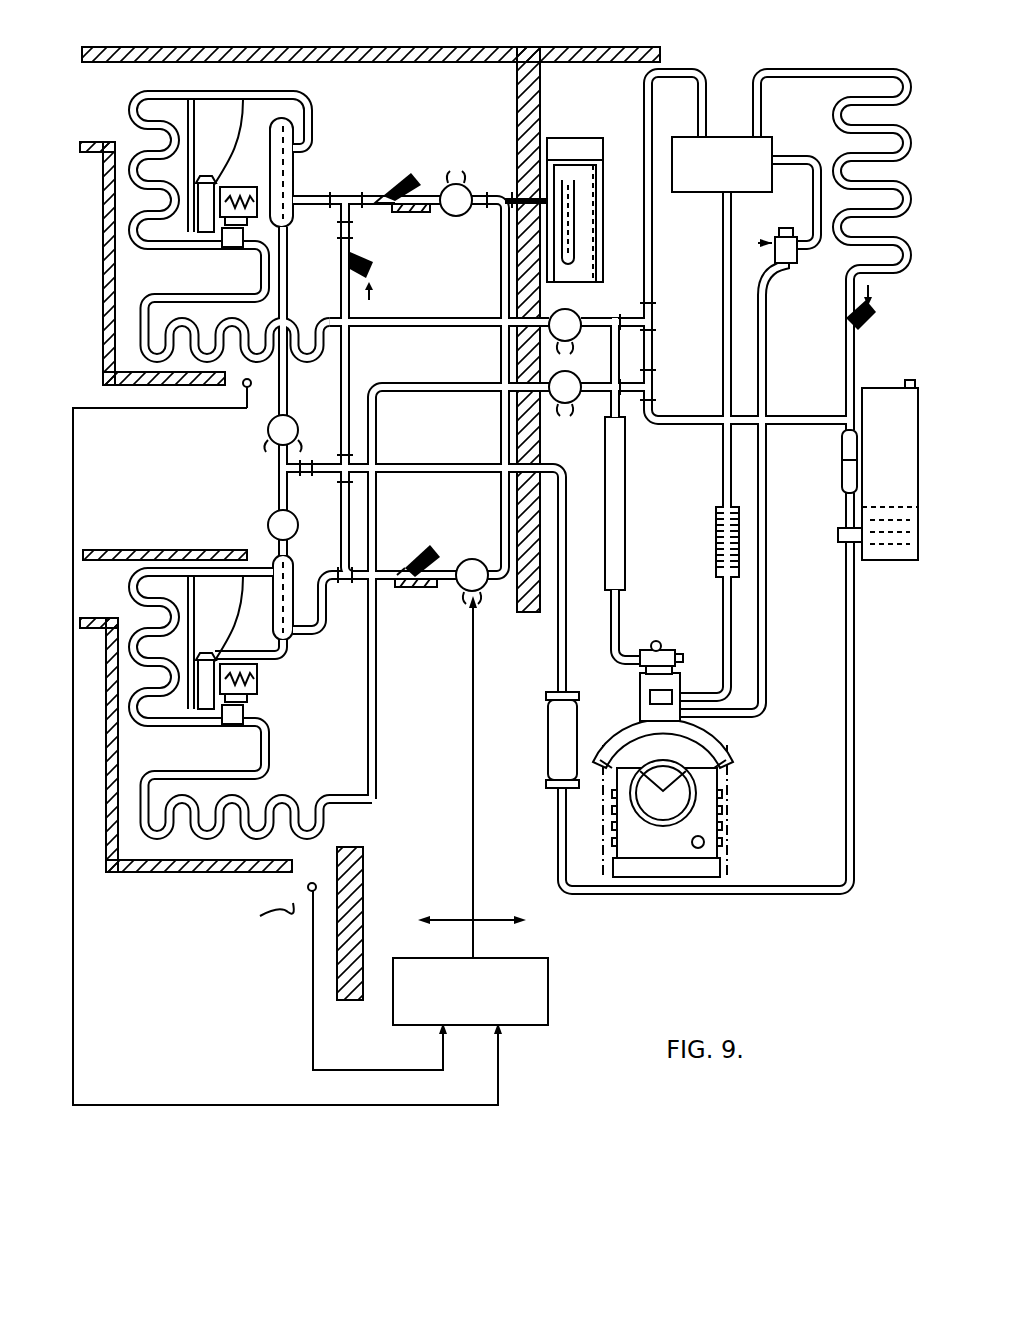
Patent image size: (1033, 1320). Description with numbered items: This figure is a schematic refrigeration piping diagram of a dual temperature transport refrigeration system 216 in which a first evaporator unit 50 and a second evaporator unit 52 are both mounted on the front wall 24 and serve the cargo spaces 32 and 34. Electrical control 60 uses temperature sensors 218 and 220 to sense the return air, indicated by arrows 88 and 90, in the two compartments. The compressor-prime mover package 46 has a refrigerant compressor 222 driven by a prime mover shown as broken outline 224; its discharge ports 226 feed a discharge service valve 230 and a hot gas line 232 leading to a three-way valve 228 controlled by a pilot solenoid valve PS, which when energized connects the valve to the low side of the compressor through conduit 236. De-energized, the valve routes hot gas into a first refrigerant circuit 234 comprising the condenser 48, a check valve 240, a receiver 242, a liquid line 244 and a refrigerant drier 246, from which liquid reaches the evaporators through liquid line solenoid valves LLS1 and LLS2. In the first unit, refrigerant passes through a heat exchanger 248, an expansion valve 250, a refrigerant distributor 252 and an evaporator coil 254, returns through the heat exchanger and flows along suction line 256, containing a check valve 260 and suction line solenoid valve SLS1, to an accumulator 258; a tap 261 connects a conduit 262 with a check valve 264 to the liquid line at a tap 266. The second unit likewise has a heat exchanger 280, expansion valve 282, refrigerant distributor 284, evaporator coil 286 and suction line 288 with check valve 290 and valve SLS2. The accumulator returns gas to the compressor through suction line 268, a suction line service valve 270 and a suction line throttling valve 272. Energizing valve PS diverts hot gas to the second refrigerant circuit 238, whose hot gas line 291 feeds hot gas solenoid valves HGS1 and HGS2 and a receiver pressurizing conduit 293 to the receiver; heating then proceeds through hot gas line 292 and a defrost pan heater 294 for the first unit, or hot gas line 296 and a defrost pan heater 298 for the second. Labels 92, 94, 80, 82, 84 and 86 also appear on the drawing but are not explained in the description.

The refrigeration system 216 is at (371, 35).
The air flow 92 is at (70, 102).
The first evaporator unit 50 is at (140, 95).
The evaporator coil 254 is at (128, 128).
The front wall 24 is at (517, 99).
The accumulator 258 is at (575, 138).
The second refrigerant circuit 238 is at (672, 52).
The first refrigerant circuit 234 is at (862, 52).
The condenser 48 is at (893, 75).
The heat exchanger 248 is at (298, 150).
The tap 261 is at (360, 200).
The suction line solenoid valve SLS1 is at (420, 155).
The compartment wall 84 is at (103, 212).
The suction line 256 is at (338, 240).
The check valve 260 is at (400, 213).
The check valve 264 is at (375, 266).
The three-way valve 228 is at (715, 194).
The pilot solenoid valve PS is at (796, 236).
The evaporator coil 80 is at (128, 273).
The expansion valve 250 is at (198, 234).
The refrigerant distributor 252 is at (232, 250).
The defrost pan heater 294 is at (288, 322).
The hot gas line 292 is at (438, 318).
The hot gas solenoid valve HGS1 is at (564, 320).
The hot gas line 291 is at (658, 280).
The check valve 240 is at (845, 318).
The return air 88 is at (228, 388).
The temperature sensor 218 is at (252, 384).
The conduit 262 is at (352, 357).
The hot gas line 296 is at (438, 387).
The cargo space 32 is at (287, 756).
The liquid line solenoid valve LLS1 is at (268, 446).
The tap 266 is at (328, 466).
The hot gas solenoid valve HGS2 is at (567, 408).
The receiver 242 is at (885, 388).
The receiver pressurizing conduit 293 is at (820, 418).
The hot gas line 232 is at (722, 455).
The liquid line solenoid valve LLS2 is at (267, 528).
The second evaporator unit 52 is at (140, 572).
The check valve 290 is at (418, 545).
The suction line solenoid valve SLS2 is at (425, 530).
The air flow 94 is at (84, 593).
The evaporator coil 286 is at (178, 603).
The heat exchanger 280 is at (273, 633).
The suction line 288 is at (392, 586).
The suction line 268 is at (625, 605).
The conduit 236 is at (770, 607).
The suction line service valve 270 is at (676, 656).
The suction line throttling valve 272 is at (646, 680).
The discharge service valve 230 is at (640, 710).
The refrigerant drier 246 is at (548, 740).
The discharge ports 226 is at (733, 751).
The refrigerant compressor 222 is at (698, 790).
The compressor-prime mover package 46 is at (728, 826).
The prime mover 224 is at (722, 866).
The liquid line 244 is at (852, 708).
The evaporator coil 82 is at (135, 768).
The expansion valve 282 is at (198, 712).
The refrigerant distributor 284 is at (232, 726).
The defrost pan heater 298 is at (287, 799).
The compartment wall 86 is at (106, 838).
The temperature sensor 220 is at (308, 887).
The cargo space 34 is at (263, 923).
The return air 90 is at (278, 927).
The electrical control 60 is at (548, 985).